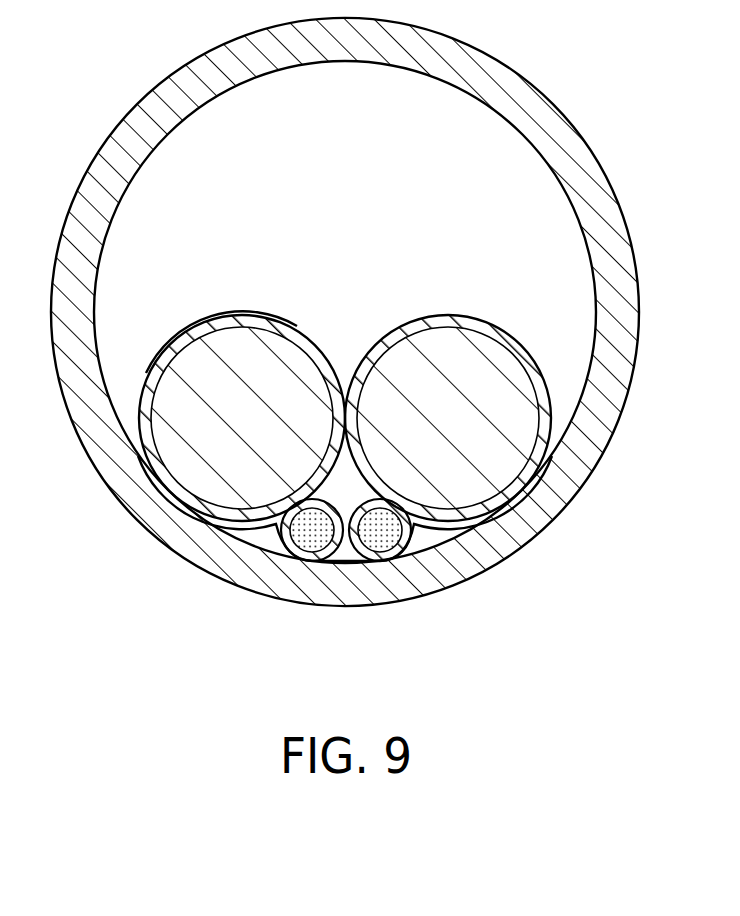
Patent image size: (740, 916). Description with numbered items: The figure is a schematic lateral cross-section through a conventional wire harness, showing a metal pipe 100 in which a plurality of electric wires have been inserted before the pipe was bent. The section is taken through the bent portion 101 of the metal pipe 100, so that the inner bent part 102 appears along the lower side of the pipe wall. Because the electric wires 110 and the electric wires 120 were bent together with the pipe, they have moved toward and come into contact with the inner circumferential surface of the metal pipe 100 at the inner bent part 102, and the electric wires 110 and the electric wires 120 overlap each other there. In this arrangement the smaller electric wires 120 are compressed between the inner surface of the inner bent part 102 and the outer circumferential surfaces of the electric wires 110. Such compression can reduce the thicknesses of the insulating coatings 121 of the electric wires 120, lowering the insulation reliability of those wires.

The metal pipe 100 is at (345, 340).
The bent portion 101 is at (556, 104).
The inner bent part 102 is at (345, 487).
The electric wires 110 is at (141, 389).
The electric wires 120 is at (345, 548).
The insulating coatings 121 is at (287, 514).